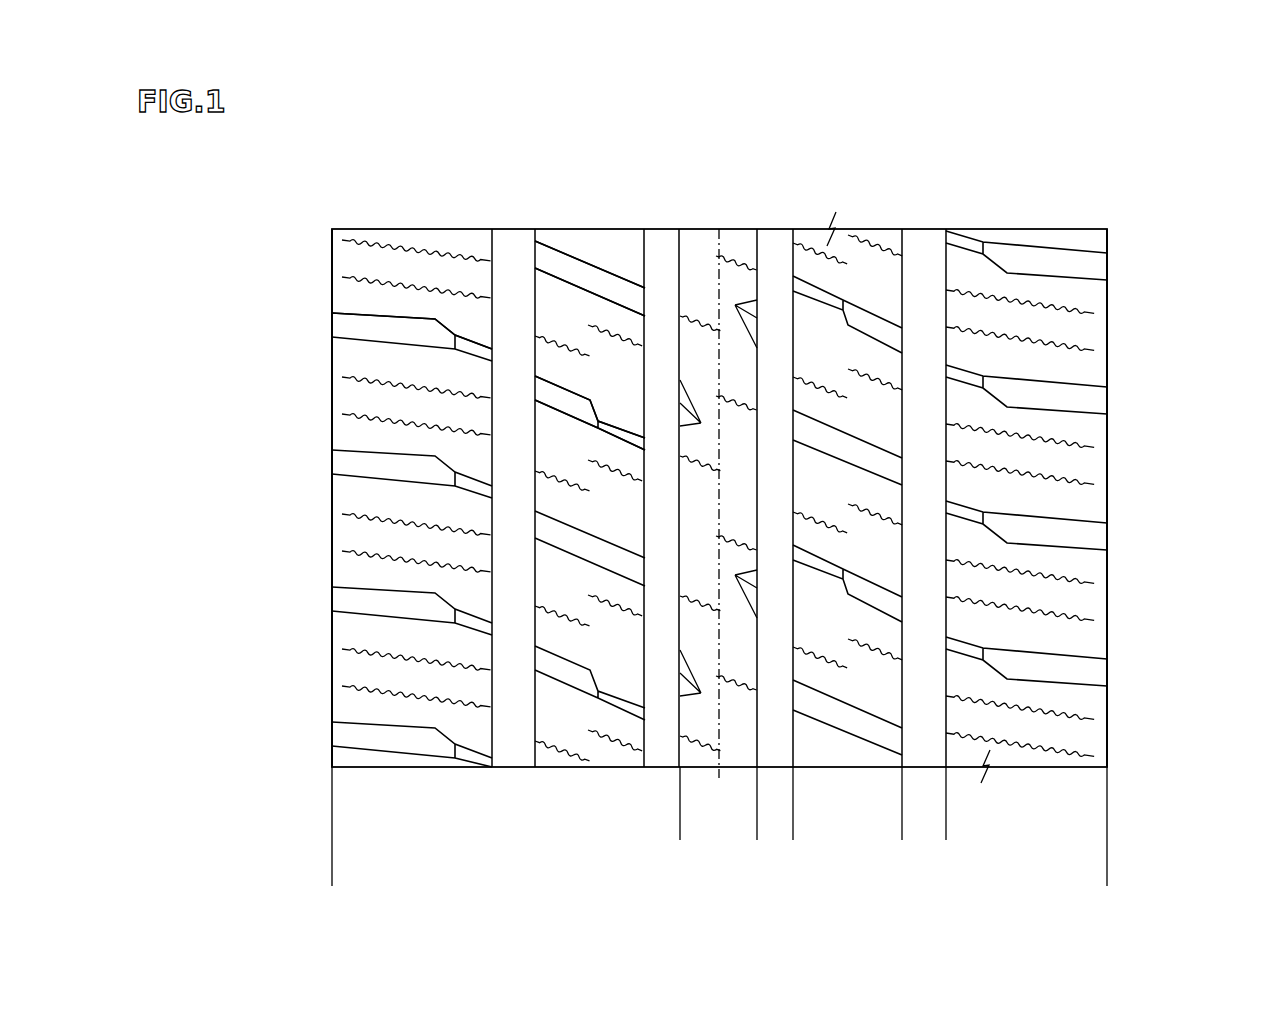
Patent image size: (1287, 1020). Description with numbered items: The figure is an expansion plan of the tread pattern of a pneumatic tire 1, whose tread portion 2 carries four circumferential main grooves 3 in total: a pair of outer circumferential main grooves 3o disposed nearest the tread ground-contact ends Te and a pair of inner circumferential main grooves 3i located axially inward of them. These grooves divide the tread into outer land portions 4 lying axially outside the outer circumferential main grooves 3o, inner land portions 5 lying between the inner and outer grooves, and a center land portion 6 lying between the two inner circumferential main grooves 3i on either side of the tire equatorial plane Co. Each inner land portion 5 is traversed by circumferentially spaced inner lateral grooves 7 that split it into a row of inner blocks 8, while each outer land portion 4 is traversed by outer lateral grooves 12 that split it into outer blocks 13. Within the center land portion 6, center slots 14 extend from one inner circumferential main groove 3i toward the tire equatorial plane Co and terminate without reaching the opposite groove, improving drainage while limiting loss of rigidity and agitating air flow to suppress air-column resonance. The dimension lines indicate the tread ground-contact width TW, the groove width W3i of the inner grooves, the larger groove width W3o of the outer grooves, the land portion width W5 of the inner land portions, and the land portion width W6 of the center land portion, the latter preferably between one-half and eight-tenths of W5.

The pneumatic tire 1 is at (1180, 232).
The tread portion 2 is at (1101, 226).
The outer circumferential main groove 3o is at (514, 262).
The inner circumferential main groove 3i is at (660, 260).
The circumferential main groove 3 is at (776, 258).
The outer land portion 4 is at (332, 782).
The inner land portion 5 is at (535, 782).
The center land portion 6 is at (757, 782).
The inner lateral groove 7 is at (571, 388).
The inner block 8 is at (606, 397).
The outer lateral groove 12 is at (362, 307).
The outer block 13 is at (424, 372).
The center slot 14 is at (701, 400).
The tread ground-contact end Te is at (332, 400).
The tire equatorial plane Co is at (719, 232).
The tread ground-contact width TW is at (1107, 880).
The land portion width of the center land portion W6 is at (757, 833).
The groove width of the inner circumferential main groove W3i is at (776, 814).
The land portion width of the inner land portion W5 is at (902, 833).
The groove width of the outer circumferential main groove W3o is at (977, 833).